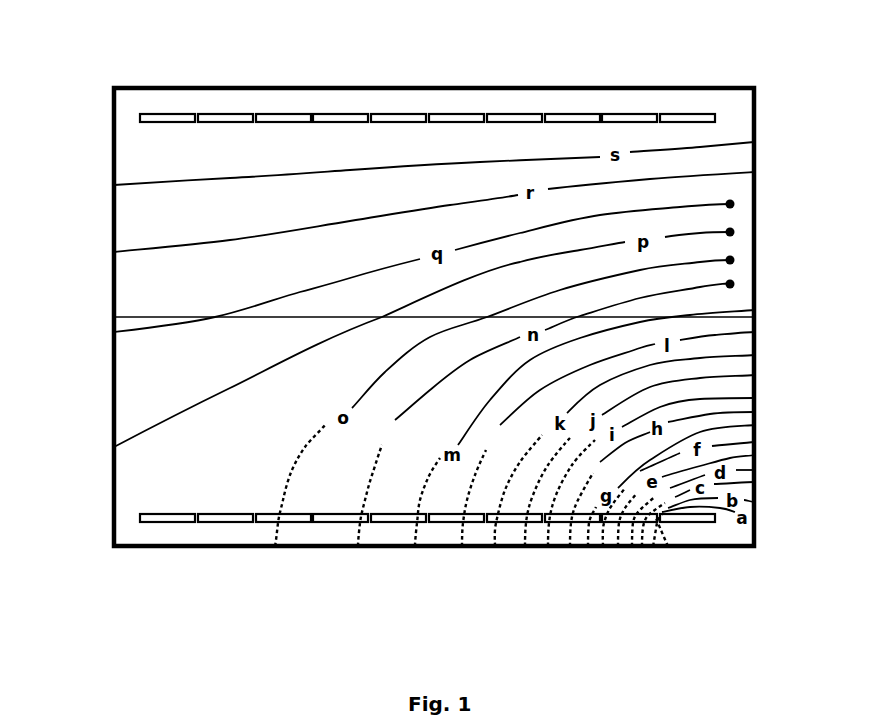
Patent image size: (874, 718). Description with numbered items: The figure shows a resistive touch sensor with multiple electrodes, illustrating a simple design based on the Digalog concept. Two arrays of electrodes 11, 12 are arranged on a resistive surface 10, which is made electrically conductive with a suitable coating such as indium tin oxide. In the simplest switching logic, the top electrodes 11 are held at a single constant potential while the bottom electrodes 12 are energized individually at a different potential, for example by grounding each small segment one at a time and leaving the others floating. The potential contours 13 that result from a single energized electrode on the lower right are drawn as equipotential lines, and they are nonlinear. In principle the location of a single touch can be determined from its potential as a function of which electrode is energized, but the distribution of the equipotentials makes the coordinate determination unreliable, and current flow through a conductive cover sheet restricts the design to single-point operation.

The resistive surface 10 is at (152, 157).
The top electrodes 11 is at (154, 100).
The bottom electrodes 12 is at (158, 533).
The potential contours 13 is at (730, 204).